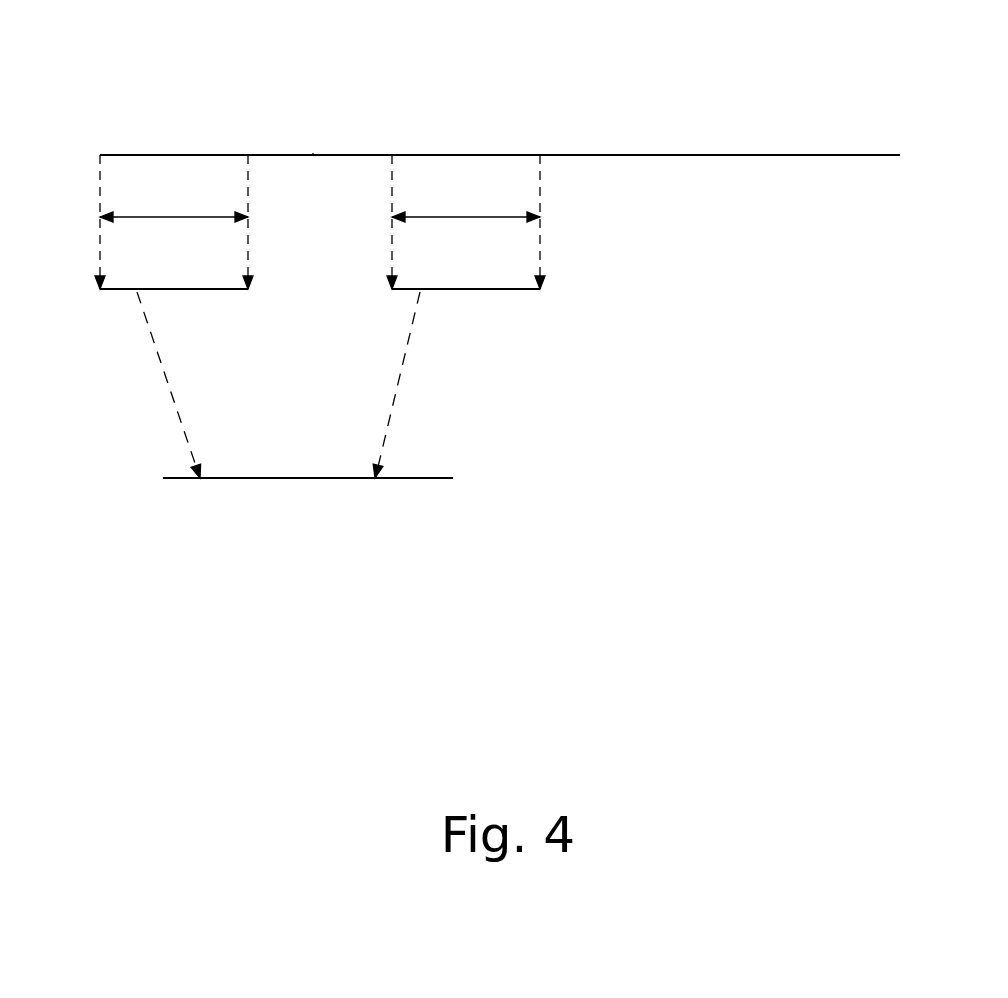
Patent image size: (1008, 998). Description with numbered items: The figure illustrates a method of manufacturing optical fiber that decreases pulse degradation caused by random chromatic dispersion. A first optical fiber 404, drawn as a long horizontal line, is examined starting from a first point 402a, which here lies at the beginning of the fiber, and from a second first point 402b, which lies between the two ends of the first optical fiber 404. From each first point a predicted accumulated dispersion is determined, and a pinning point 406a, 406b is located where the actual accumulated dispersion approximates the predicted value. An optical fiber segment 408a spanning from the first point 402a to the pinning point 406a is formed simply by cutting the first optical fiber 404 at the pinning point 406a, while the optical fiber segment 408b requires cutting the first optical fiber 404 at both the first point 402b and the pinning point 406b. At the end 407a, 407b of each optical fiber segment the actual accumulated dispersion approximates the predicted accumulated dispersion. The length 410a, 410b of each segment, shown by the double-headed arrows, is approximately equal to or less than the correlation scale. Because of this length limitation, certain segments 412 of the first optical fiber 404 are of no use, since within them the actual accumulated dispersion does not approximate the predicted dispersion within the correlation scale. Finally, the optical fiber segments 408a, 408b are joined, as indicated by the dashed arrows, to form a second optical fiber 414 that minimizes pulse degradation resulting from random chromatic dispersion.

The first point 402a is at (100, 155).
The pinning point 406a is at (248, 155).
The first point 402b is at (392, 155).
The pinning point 406b is at (540, 155).
The first optical fiber 404 is at (692, 155).
The segments of the first optical fiber 412 is at (313, 155).
The length of the optical fiber segment 410a is at (178, 217).
The length of the optical fiber segment 410b is at (470, 217).
The end of the optical fiber segment 407a is at (246, 292).
The end of the optical fiber segment 407b is at (540, 292).
The optical fiber segment 408a is at (176, 292).
The optical fiber segment 408b is at (467, 292).
The second optical fiber 414 is at (267, 480).